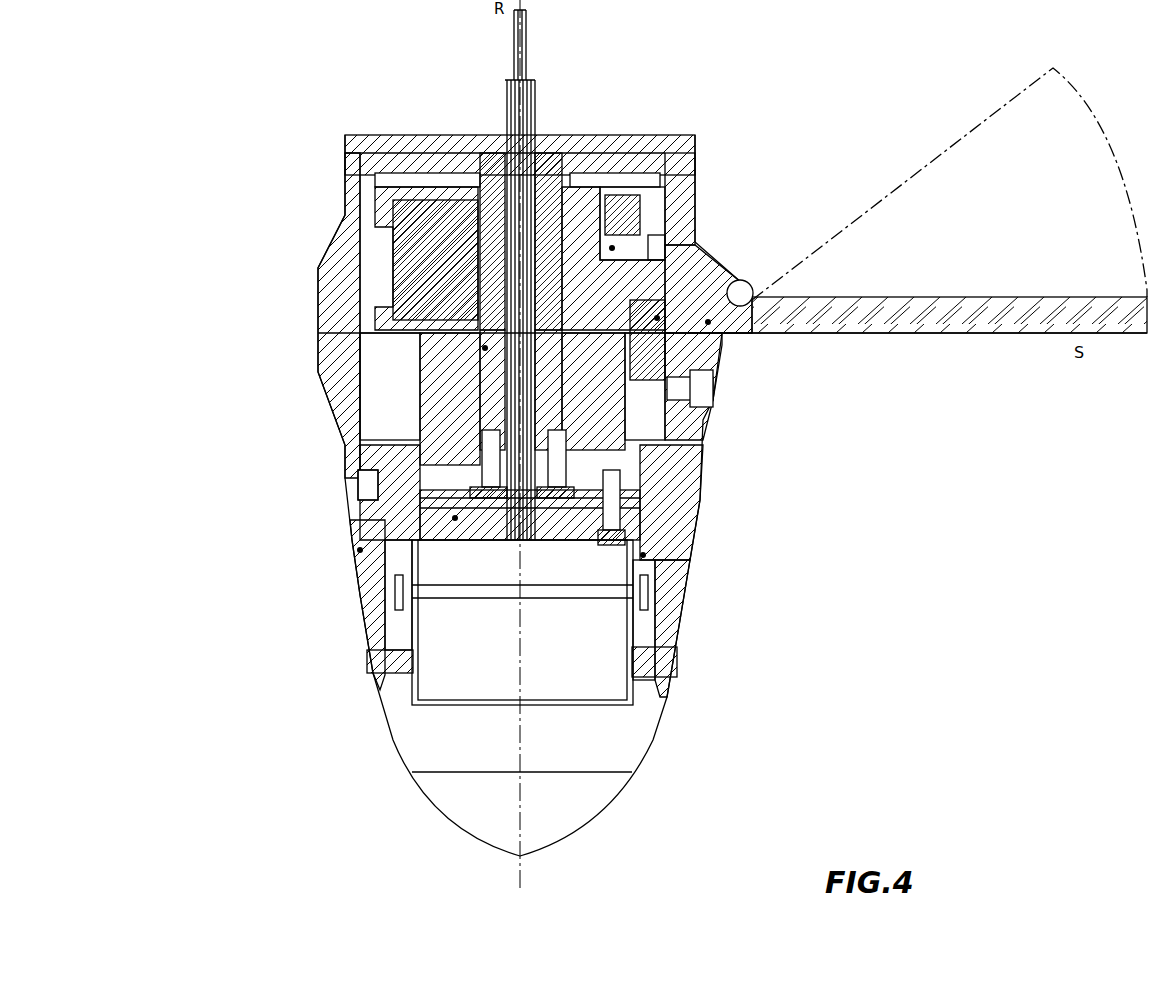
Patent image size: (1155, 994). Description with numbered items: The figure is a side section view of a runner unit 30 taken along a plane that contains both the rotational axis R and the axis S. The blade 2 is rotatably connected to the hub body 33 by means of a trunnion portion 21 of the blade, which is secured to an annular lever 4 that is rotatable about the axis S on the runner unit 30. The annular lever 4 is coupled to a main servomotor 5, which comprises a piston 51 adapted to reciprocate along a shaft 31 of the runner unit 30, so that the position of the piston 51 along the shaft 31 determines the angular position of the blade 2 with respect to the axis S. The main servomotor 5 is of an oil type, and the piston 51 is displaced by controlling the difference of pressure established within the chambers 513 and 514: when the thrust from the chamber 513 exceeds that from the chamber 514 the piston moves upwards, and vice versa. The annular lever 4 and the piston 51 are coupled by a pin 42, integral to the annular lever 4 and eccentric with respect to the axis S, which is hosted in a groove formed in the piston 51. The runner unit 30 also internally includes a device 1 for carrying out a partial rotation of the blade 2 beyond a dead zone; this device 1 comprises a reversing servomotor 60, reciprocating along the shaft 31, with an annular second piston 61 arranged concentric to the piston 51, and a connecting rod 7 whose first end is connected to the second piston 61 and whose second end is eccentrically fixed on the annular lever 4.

The device 1 is at (707, 592).
The blade 2 is at (873, 108).
The annular lever 4 is at (657, 318).
The main servomotor 5 is at (405, 425).
The connecting rod 7 is at (700, 432).
The trunnion portion 21 is at (712, 338).
The runner unit 30 is at (160, 118).
The shaft 31 is at (485, 348).
The hub body 33 is at (357, 550).
The pin 42 is at (665, 135).
The piston 51 is at (352, 487).
The reversing servomotor 60 is at (355, 597).
The second piston 61 is at (653, 557).
The chamber 513 is at (658, 517).
The chamber 514 is at (465, 425).